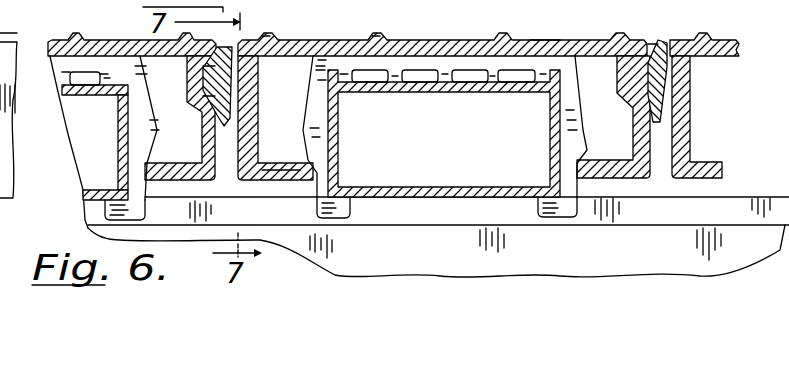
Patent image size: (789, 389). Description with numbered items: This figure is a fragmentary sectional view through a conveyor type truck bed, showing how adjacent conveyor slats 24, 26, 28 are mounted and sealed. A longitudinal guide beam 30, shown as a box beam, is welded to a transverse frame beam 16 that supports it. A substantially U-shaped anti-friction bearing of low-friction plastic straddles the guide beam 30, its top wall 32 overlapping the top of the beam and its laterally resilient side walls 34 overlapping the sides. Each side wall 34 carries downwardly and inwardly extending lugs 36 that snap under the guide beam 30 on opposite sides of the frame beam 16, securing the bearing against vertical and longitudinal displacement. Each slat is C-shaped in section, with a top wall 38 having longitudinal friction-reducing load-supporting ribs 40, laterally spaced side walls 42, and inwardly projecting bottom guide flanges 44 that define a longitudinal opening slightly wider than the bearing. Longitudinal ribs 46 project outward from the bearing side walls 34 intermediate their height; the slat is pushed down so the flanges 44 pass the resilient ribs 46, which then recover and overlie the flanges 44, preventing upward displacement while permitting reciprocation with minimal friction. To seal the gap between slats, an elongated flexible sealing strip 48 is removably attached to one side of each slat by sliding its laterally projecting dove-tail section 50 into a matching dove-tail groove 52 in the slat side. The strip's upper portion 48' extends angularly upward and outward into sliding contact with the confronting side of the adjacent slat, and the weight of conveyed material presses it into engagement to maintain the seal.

The transverse frame beam 16 is at (753, 243).
The slat 24 is at (100, 34).
The slat 26 is at (594, 33).
The slat 28 is at (723, 30).
The guide beam 30 is at (467, 197).
The top wall 32 is at (447, 70).
The side wall 34 is at (315, 78).
The lug 36 is at (340, 218).
The top wall 38 is at (551, 38).
The friction-reducing load-supporting rib 40 is at (384, 33).
The side wall 42 is at (254, 95).
The bottom guide flange 44 is at (281, 181).
The longitudinal rib 46 is at (303, 143).
The sealing strip 48 is at (472, 134).
The upper portion of sealing strip 48' is at (664, 23).
The dove-tail section 50 is at (203, 71).
The dove-tail groove 52 is at (205, 93).